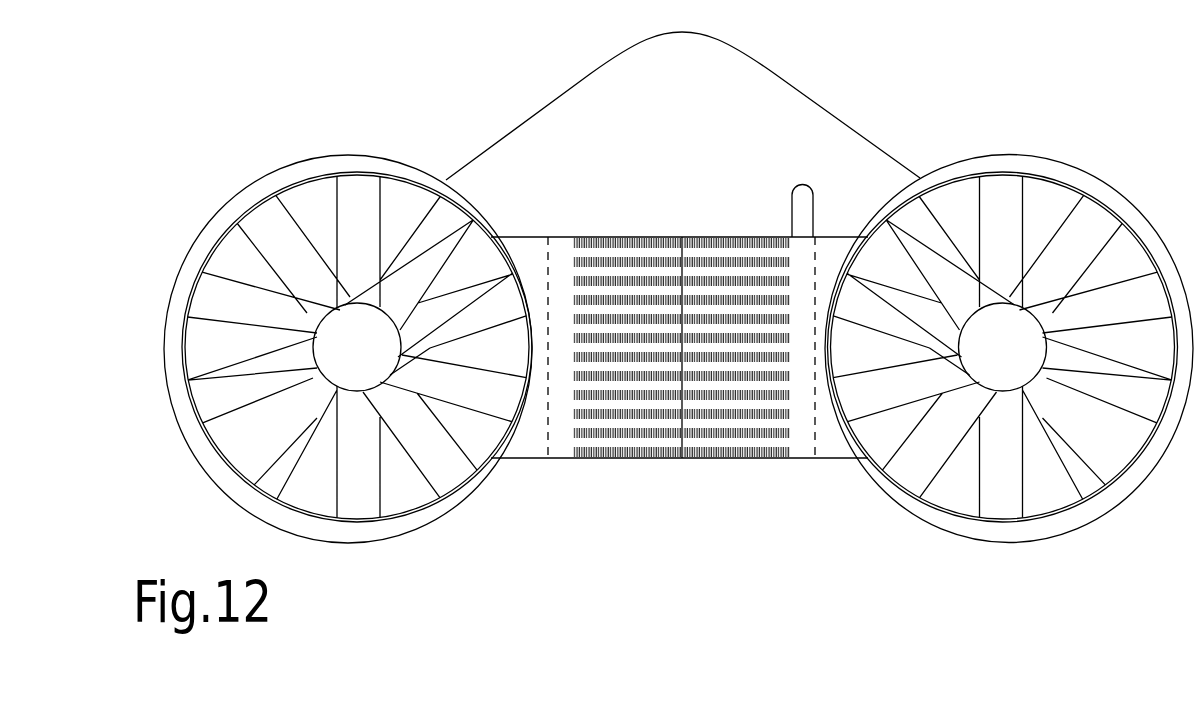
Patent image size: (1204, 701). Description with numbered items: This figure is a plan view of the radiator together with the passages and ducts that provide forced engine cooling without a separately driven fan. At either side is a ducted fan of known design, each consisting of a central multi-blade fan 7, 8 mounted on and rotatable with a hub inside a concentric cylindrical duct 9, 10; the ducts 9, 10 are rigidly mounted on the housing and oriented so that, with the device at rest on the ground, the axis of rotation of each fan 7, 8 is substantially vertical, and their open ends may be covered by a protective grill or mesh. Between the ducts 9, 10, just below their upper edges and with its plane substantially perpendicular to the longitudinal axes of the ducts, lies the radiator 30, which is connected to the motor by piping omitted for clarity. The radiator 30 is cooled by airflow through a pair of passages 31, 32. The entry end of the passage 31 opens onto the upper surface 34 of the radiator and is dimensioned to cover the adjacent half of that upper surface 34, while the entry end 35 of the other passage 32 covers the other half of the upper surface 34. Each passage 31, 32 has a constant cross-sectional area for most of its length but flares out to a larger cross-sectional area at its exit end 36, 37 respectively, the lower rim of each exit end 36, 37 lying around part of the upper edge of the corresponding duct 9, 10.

The multi-blade fan 7 is at (370, 503).
The multi-blade fan 8 is at (1007, 503).
The cylindrical duct 9 is at (261, 173).
The cylindrical duct 10 is at (1104, 172).
The radiator 30 is at (643, 483).
The passage 31 is at (566, 462).
The passage 32 is at (803, 449).
The upper surface of the radiator 34 is at (670, 237).
The entry end 35 is at (692, 237).
The exit end 36 is at (503, 236).
The exit end 37 is at (886, 212).